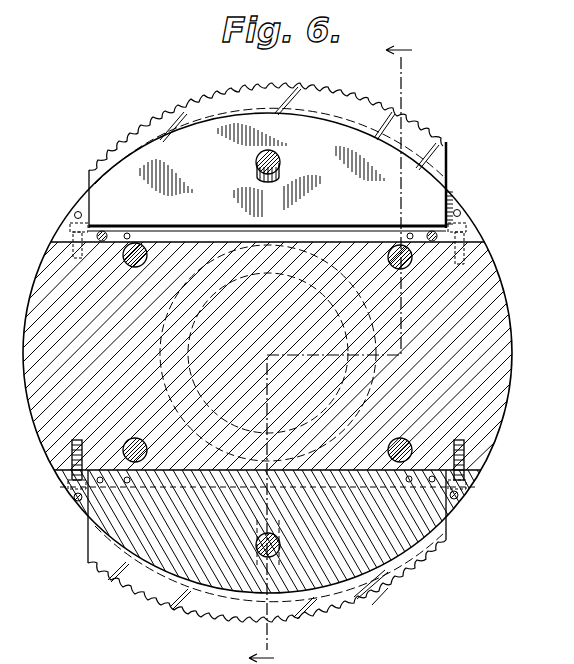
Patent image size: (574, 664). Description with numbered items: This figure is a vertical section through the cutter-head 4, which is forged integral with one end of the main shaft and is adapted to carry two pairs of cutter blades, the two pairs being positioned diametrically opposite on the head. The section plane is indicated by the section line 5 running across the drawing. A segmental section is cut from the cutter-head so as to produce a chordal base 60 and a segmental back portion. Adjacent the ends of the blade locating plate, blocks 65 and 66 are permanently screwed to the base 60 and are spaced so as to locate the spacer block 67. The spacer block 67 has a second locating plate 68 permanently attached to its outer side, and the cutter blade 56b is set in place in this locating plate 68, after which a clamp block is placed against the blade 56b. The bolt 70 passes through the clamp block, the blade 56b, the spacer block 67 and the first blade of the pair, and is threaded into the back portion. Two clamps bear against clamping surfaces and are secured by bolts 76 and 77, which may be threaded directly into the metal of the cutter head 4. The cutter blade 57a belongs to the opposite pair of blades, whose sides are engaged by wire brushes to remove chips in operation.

The cutter-head 4 is at (41, 283).
The section line 5- 5 is at (341, 351).
The cutter blade 56b is at (464, 150).
The cutter blade 57a is at (376, 609).
The chordal base 60 is at (318, 241).
The block 65 is at (53, 240).
The block 66 is at (472, 237).
The spacer block 67 is at (282, 178).
The second locating plate 68 is at (186, 230).
The bolt 70 is at (281, 160).
The bolt 76 is at (140, 243).
The bolt 77 is at (400, 245).